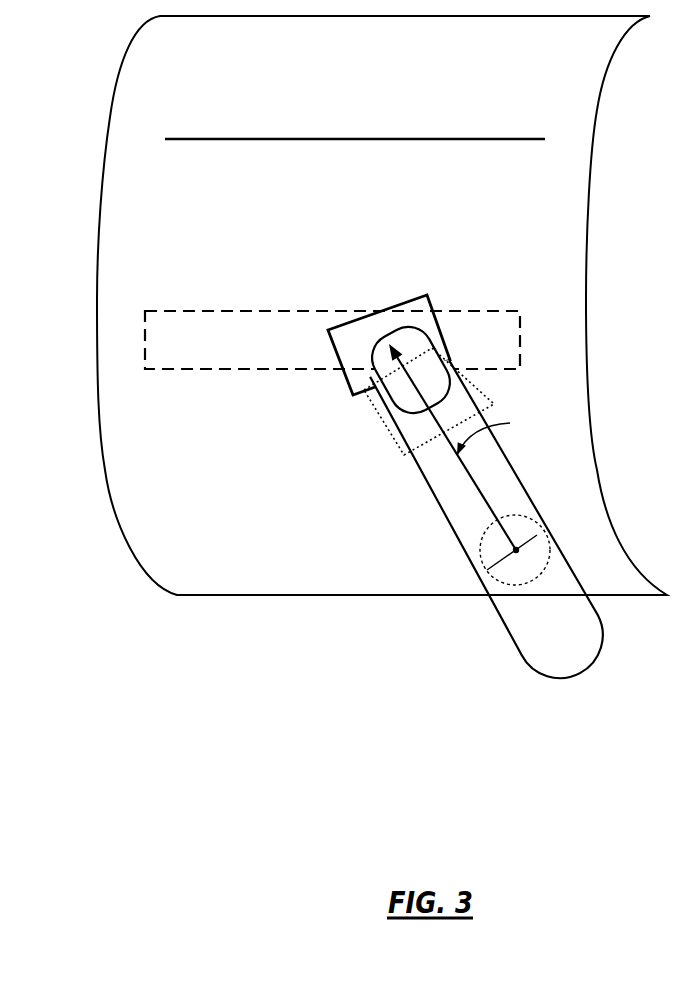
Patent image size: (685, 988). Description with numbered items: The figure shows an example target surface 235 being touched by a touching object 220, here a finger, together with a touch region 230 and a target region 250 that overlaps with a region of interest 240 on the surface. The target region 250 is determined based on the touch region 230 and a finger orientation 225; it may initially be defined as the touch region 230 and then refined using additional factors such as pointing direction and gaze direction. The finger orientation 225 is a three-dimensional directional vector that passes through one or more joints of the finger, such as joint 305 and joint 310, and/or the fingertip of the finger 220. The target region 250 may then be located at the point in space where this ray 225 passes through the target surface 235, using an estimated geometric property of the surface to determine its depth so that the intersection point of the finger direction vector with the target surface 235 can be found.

The touching object 220 is at (586, 621).
The finger orientation 225 is at (481, 498).
The touch region 230 is at (378, 415).
The target surface 235 is at (355, 355).
The region of interest 240 is at (146, 326).
The target region 250 is at (428, 297).
The joint 305 is at (518, 548).
The joint 310 is at (505, 434).